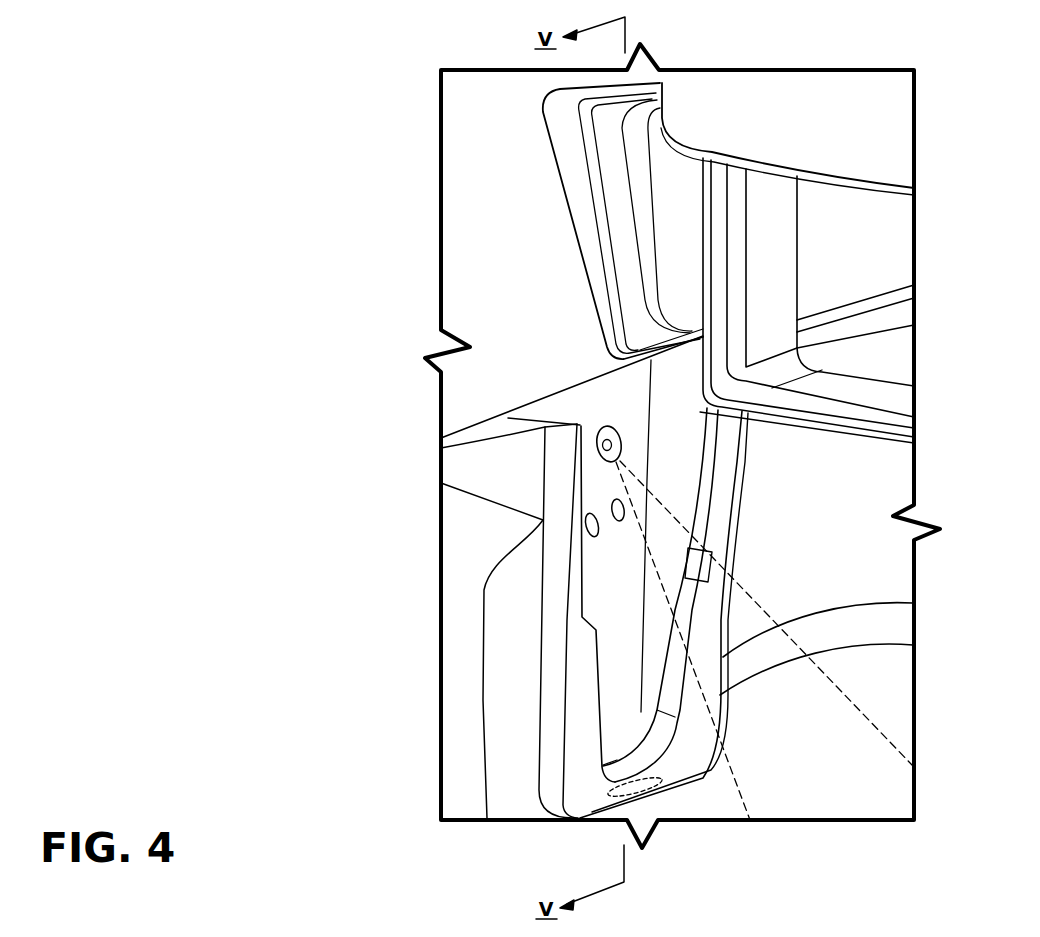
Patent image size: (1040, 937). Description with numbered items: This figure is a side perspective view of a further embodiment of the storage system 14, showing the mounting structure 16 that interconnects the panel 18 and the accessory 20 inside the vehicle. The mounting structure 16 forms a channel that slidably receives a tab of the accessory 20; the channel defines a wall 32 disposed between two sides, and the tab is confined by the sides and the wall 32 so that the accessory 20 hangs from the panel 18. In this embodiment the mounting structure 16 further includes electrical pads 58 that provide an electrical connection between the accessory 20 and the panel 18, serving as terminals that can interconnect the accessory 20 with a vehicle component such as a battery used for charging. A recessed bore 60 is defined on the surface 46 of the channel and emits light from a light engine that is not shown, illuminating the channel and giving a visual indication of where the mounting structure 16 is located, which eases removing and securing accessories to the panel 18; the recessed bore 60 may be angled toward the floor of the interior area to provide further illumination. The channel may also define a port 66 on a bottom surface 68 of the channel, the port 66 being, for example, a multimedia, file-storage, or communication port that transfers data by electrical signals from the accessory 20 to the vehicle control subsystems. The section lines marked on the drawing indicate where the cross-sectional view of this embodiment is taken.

The storage system 14 is at (572, 279).
The mounting structure 16 is at (466, 466).
The panel 18 is at (845, 332).
The accessory 20 is at (862, 112).
The wall 32 is at (580, 703).
The surface 46 is at (630, 400).
The electrical pads 58 is at (584, 537).
The recessed bore 60 is at (598, 428).
The port 66 is at (652, 788).
The bottom surface 68 is at (560, 818).